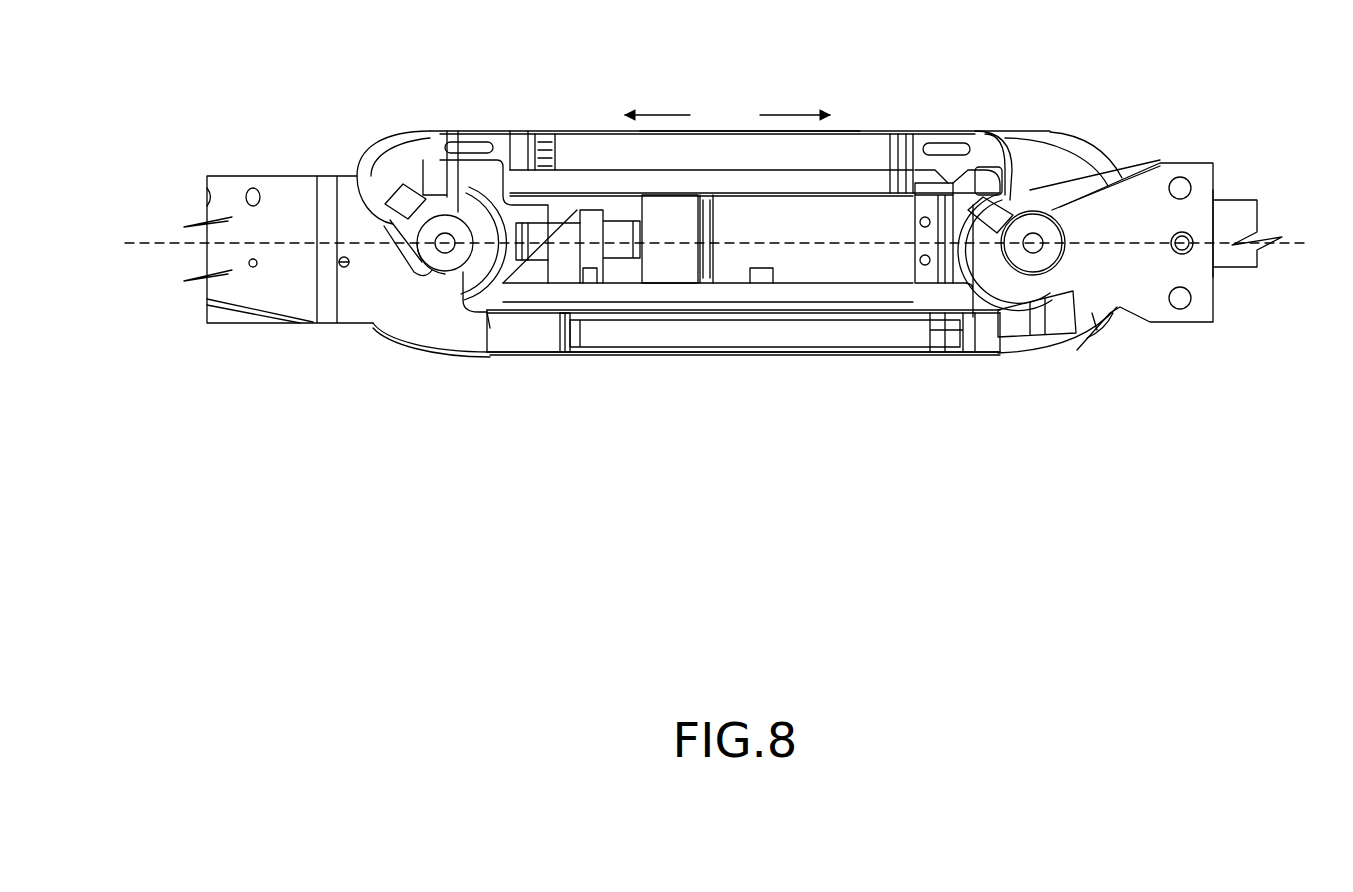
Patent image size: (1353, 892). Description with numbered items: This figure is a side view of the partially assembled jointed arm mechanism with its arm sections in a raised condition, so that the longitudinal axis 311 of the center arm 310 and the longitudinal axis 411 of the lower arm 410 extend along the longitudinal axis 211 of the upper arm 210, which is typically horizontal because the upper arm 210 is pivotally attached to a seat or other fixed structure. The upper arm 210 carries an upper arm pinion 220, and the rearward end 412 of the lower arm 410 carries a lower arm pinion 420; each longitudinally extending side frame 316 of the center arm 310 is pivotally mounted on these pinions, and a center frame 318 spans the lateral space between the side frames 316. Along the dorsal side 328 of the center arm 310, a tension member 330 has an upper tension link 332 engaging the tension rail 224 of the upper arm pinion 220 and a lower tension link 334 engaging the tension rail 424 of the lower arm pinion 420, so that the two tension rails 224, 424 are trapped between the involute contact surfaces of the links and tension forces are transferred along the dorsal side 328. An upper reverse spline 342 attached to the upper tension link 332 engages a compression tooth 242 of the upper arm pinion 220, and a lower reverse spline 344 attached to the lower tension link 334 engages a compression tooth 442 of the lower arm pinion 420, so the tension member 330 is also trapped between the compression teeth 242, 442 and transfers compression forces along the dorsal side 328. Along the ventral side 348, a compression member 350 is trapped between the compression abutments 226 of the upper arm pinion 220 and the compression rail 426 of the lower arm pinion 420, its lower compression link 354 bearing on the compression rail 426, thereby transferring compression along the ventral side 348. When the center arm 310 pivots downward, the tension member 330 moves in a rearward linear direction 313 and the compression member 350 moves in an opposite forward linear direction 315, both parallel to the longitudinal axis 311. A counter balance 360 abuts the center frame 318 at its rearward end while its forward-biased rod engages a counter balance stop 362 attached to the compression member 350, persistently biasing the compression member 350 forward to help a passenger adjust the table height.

The upper arm 210 is at (1208, 350).
The longitudinal axis of the upper arm 211 is at (1275, 253).
The upper arm pinion 220 is at (1137, 193).
The tension rail 224 is at (1000, 317).
The compression abutment 226 is at (1095, 312).
The compression teeth 242 is at (1078, 165).
The center arm 310 is at (748, 52).
The longitudinal axis of the center arm 311 is at (738, 250).
The rearward linear direction 313 is at (792, 112).
The forward linear direction 315 is at (668, 112).
The side frame 316 is at (1055, 131).
The center frame 318 is at (948, 298).
The dorsal side 328 is at (703, 75).
The tension member 330 is at (868, 131).
The upper tension link 332 is at (1015, 150).
The lower tension link 334 is at (403, 150).
The upper reverse spline 342 is at (980, 148).
The lower reverse spline 344 is at (433, 152).
The ventral side 348 is at (660, 382).
The compression member 350 is at (780, 342).
The lower compression link 354 is at (500, 322).
The counter balance 360 is at (835, 265).
The counter balance stop 362 is at (598, 302).
The lower arm 410 is at (215, 138).
The longitudinal axis of the lower arm 411 is at (153, 255).
The rearward end of the lower arm 412 is at (257, 295).
The lower arm pinion 420 is at (405, 318).
The tension rail 424 is at (457, 183).
The compression rail 426 is at (475, 313).
The compression teeth 442 is at (387, 188).